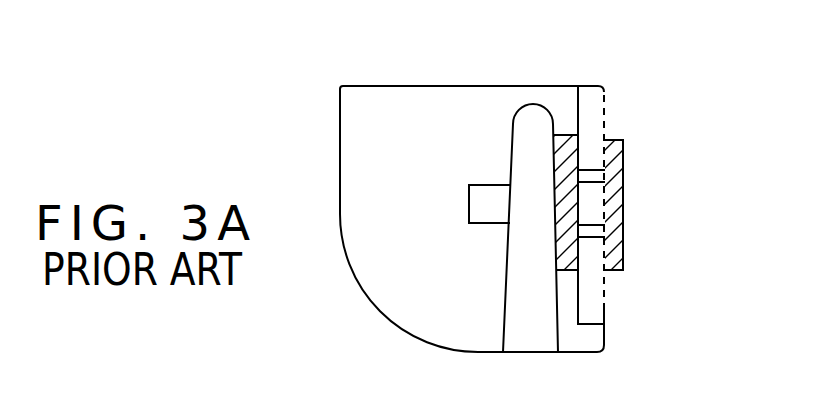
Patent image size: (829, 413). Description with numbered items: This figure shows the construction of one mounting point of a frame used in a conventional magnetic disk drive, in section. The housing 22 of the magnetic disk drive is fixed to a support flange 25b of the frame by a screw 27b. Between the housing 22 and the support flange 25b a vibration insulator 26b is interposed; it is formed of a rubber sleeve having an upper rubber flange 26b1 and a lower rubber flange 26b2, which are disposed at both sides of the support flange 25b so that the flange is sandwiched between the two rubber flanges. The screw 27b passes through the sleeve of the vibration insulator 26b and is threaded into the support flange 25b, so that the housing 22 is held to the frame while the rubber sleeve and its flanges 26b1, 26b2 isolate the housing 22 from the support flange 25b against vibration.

The housing 22 is at (523, 131).
The support flange 25b is at (588, 100).
The vibration insulator 26b is at (620, 260).
The upper rubber flange 26b1 is at (565, 135).
The lower rubber flange 26b2 is at (625, 147).
The screw 27b is at (468, 205).